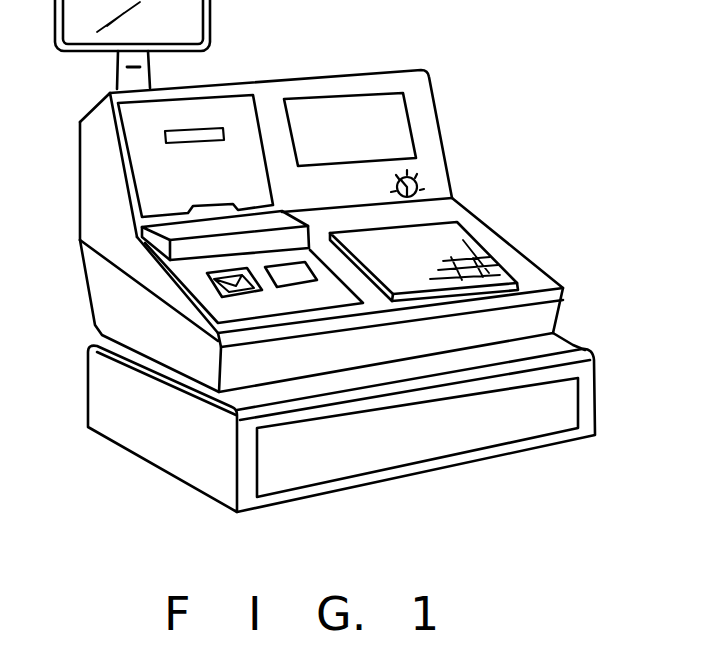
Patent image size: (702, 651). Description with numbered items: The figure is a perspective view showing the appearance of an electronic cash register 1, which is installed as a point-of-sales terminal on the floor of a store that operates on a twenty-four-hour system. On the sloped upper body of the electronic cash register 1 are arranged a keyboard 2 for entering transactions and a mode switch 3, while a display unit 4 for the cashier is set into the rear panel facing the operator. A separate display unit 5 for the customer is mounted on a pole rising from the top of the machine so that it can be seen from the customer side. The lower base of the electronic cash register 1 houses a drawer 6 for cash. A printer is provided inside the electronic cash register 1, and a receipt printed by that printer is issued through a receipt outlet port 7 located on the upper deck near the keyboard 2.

The electronic cash register 1 is at (80, 198).
The keyboard 2 is at (487, 241).
The mode switch 3 is at (419, 187).
The display unit for cashier 4 is at (402, 140).
The display unit for customer 5 is at (210, 3).
The drawer 6 is at (453, 447).
The receipt outlet port 7 is at (205, 271).